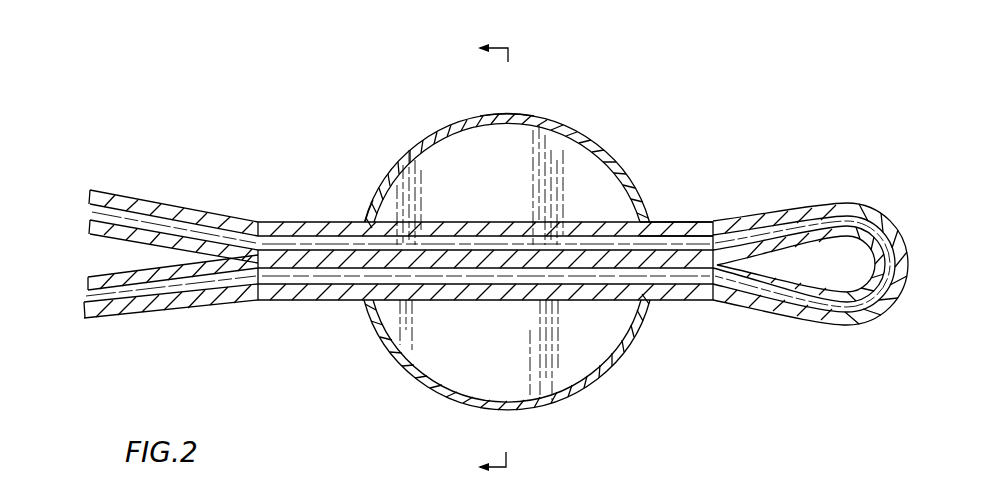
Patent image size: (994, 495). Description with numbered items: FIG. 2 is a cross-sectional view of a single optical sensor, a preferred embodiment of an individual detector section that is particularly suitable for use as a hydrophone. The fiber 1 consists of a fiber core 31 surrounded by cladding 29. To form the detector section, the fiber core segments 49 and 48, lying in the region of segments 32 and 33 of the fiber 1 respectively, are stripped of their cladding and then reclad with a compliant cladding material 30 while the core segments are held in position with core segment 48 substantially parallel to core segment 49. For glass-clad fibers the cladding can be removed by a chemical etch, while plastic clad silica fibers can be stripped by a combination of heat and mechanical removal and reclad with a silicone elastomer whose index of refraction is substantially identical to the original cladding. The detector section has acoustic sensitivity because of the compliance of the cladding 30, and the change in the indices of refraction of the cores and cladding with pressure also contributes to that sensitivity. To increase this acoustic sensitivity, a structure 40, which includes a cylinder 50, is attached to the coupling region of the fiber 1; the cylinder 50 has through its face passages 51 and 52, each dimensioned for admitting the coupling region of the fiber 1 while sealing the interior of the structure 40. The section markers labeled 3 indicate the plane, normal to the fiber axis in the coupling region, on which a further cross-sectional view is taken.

The fiber 1 is at (166, 314).
The cladding 29 is at (112, 236).
The fiber core 31 is at (167, 222).
The segment of fiber 33 is at (282, 221).
The compliant cladding material 30 is at (340, 257).
The segment of fiber 32 is at (322, 301).
The structure 40 is at (430, 126).
The cylinder 50 is at (527, 112).
The passage 52 is at (368, 221).
The fiber core segment 48 is at (604, 247).
The fiber core segment 49 is at (607, 272).
The passage 51 is at (645, 222).
The section line 3- 3 is at (483, 258).